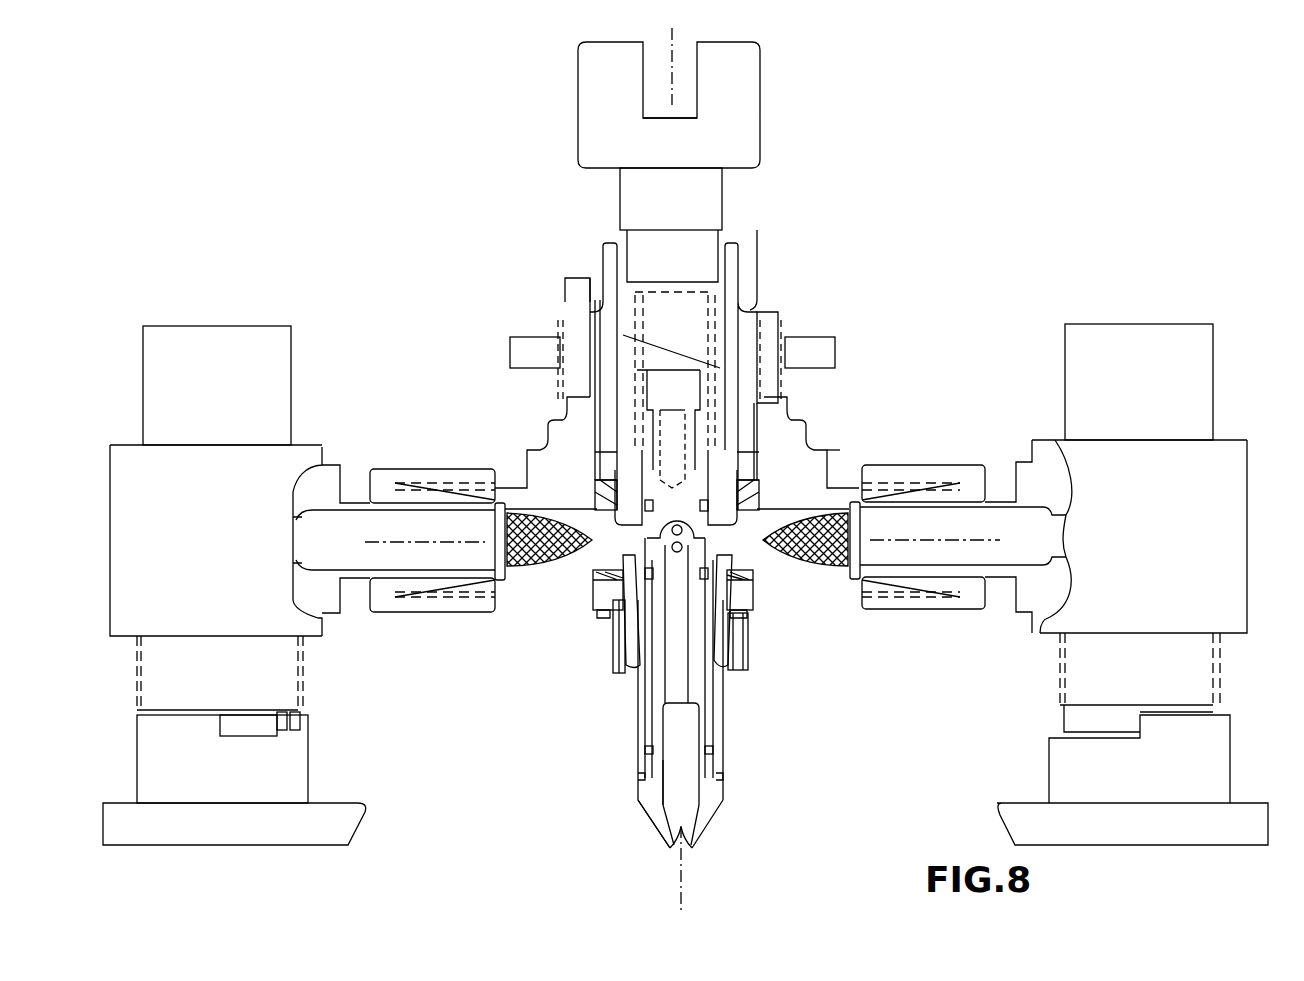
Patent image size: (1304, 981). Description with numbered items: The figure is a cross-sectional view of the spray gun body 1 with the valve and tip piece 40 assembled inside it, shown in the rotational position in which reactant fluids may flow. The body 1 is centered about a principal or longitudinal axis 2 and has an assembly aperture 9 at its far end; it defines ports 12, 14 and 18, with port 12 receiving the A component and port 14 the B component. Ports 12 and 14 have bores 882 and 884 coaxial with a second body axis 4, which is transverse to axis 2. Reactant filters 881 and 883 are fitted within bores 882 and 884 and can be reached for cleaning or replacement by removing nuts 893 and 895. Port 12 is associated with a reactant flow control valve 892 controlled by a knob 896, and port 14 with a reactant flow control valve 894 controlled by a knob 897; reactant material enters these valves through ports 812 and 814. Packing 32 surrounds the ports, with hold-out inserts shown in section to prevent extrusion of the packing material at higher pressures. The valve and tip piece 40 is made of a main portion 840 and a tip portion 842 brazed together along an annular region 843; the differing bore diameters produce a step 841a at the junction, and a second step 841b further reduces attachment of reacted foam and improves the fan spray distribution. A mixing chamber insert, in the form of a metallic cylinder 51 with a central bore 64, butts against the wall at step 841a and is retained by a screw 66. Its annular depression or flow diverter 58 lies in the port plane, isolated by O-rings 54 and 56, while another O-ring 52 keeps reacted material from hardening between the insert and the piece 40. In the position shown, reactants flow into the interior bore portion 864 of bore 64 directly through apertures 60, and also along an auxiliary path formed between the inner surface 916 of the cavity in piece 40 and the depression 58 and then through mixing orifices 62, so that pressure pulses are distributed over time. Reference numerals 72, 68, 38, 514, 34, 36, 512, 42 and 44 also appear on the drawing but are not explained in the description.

The principal or longitudinal axis 2 is at (664, 85).
The slot 72 is at (692, 88).
The mounting block 68 is at (760, 122).
The stem 38 is at (740, 247).
The assembly aperture 9 is at (749, 302).
The port 18 is at (838, 352).
The left rod 514 is at (524, 386).
The port of reactant flow control valve 812 is at (224, 320).
The port of reactant flow control valve 814 is at (1143, 312).
The port 12 is at (415, 432).
The port 14 is at (914, 450).
The reactant flow control valve 892 is at (262, 478).
The reactant flow control valve 894 is at (1078, 456).
The packing 32 is at (593, 490).
The right body half 34 is at (748, 438).
The plate 36 is at (745, 432).
The screw 66 is at (702, 396).
The O-ring 56 is at (742, 496).
The spray gun body 1 is at (818, 483).
The direct communication passages or apertures 60 is at (758, 514).
The annular depression or flow diverter 58 is at (648, 531).
The mixing orifices 62 is at (710, 540).
The O-ring 54 is at (730, 603).
The valve and tip piece 40 is at (597, 502).
The nozzle assembly 512 is at (828, 791).
The second step 841b is at (700, 697).
The central bore 64 is at (700, 786).
The step 841a is at (690, 812).
The right tip 42 is at (692, 848).
The left tip 44 is at (668, 850).
The tip portion 842 is at (650, 808).
The annular region 843 is at (640, 779).
The main portion 840 is at (645, 750).
The O-ring 52 is at (714, 750).
The metallic cylinder 51 is at (706, 725).
The inner surface of cavity 916 is at (648, 676).
The interior bore portion 864 is at (705, 670).
The reactant filter 881 is at (560, 568).
The bore 882 is at (596, 606).
The reactant filter 883 is at (830, 574).
The bore 884 is at (806, 580).
The second body axis 4 is at (391, 545).
The nut 893 is at (400, 608).
The nut 895 is at (982, 607).
The knob 896 is at (305, 776).
The knob 897 is at (1050, 776).